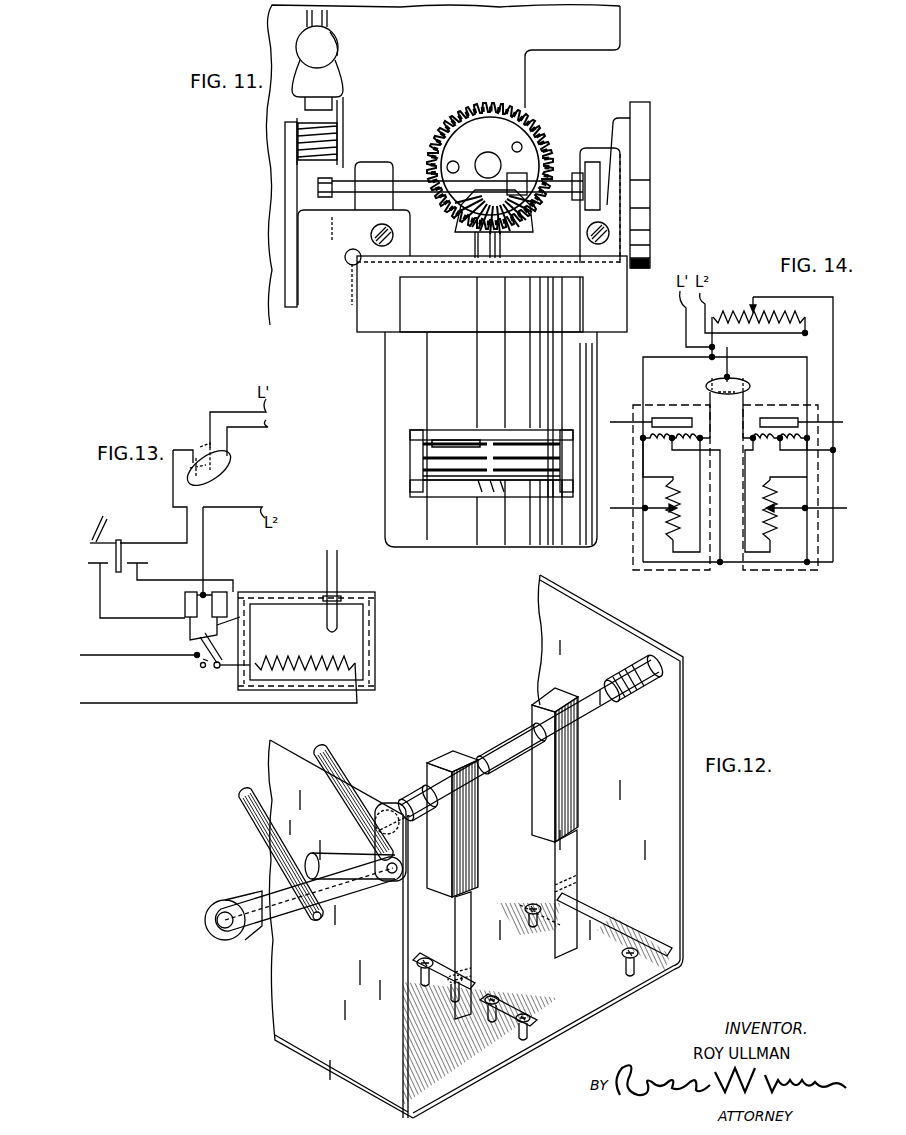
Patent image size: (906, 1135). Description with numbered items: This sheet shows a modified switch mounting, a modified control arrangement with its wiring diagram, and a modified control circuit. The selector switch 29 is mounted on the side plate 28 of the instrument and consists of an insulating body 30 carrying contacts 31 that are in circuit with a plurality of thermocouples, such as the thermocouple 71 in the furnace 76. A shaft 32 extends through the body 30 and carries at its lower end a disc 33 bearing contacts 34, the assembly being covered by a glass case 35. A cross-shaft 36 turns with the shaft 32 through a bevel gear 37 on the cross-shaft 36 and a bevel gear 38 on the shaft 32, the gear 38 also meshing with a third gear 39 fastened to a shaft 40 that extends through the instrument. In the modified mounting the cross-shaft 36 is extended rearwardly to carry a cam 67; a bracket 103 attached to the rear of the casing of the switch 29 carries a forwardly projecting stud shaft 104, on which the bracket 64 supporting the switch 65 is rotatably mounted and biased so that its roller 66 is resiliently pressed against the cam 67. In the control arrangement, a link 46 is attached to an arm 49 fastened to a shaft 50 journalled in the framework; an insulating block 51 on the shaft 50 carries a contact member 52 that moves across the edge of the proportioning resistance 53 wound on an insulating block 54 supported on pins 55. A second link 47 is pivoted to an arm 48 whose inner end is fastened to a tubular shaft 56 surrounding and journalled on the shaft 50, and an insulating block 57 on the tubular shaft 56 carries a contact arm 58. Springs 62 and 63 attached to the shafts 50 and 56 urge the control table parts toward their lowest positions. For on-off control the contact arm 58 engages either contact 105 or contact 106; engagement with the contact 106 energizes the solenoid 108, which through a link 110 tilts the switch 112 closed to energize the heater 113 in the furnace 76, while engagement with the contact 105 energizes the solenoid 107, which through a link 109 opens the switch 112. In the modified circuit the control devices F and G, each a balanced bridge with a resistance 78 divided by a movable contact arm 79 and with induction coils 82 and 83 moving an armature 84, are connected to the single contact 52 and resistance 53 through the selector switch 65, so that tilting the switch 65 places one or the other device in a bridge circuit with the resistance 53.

In FIG. 11, the side plate 28 is at (616, 40).
In FIG. 11, the switch 29 is at (627, 311).
In FIG. 11, the insulating body 30 is at (428, 364).
In FIG. 11, the contacts 31 is at (497, 430).
In FIG. 11, the shaft 32 is at (502, 250).
In FIG. 11, the disc 33 is at (430, 497).
In FIG. 11, the contacts 34 is at (410, 436).
In FIG. 11, the glass case 35 is at (388, 488).
In FIG. 11, the cross-shaft 36 is at (412, 180).
In FIG. 11, the bevel gear 37 is at (512, 160).
In FIG. 11, the bevel gear 38 is at (458, 231).
In FIG. 11, the third gear 39 is at (522, 122).
In FIG. 11, the shaft 40 is at (488, 160).
In FIG. 12, the link 46 is at (246, 808).
In FIG. 13, the link 47 is at (100, 517).
In FIG. 12, the link 47 is at (324, 748).
In FIG. 12, the arm 48 is at (368, 880).
In FIG. 12, the arm 49 is at (243, 940).
In FIG. 12, the shaft 50 is at (510, 752).
In FIG. 12, the insulating block 51 is at (567, 792).
In FIG. 14, the contact member 52 is at (752, 309).
In FIG. 12, the contact member 52 is at (572, 862).
In FIG. 14, the proportioning resistance 53 is at (792, 312).
In FIG. 12, the proportioning resistance 53 is at (588, 942).
In FIG. 12, the insulating block 54 is at (618, 930).
In FIG. 12, the pins 55 is at (531, 920).
In FIG. 12, the tubular shaft 56 is at (415, 790).
In FIG. 12, the insulating block 57 is at (447, 758).
In FIG. 13, the contact arm 58 is at (121, 548).
In FIG. 12, the contact arm 58 is at (471, 950).
In FIG. 12, the spring 62 is at (613, 684).
In FIG. 12, the spring 63 is at (383, 805).
In FIG. 11, the bracket 64 is at (343, 107).
In FIG. 11, the switch 65 is at (325, 47).
In FIG. 14, the switch 65 is at (747, 382).
In FIG. 13, the switch 65 is at (218, 466).
In FIG. 11, the roller 66 is at (333, 130).
In FIG. 11, the cam 67 is at (330, 208).
In FIG. 13, the thermocouple 71 is at (337, 618).
In FIG. 13, the furnace 76 is at (376, 672).
In FIG. 14, the resistance 78 is at (770, 542).
In FIG. 14, the movable contact arm 79 is at (787, 510).
In FIG. 14, the induction coil 82 is at (757, 444).
In FIG. 14, the induction coil 83 is at (790, 447).
In FIG. 14, the armature 84 is at (782, 417).
In FIG. 11, the bracket 103 is at (308, 268).
In FIG. 11, the stud shaft 104 is at (283, 147).
In FIG. 13, the contact 105 is at (93, 562).
In FIG. 12, the contact 105 is at (430, 958).
In FIG. 13, the contact 106 is at (142, 562).
In FIG. 12, the contact 106 is at (512, 1000).
In FIG. 13, the solenoid 107 is at (185, 600).
In FIG. 13, the solenoid 108 is at (226, 598).
In FIG. 13, the link 109 is at (190, 633).
In FIG. 13, the link 110 is at (240, 617).
In FIG. 13, the switch 112 is at (213, 666).
In FIG. 13, the heater 113 is at (297, 660).
In FIG. 14, the control device F is at (676, 572).
In FIG. 14, the control device G is at (815, 572).